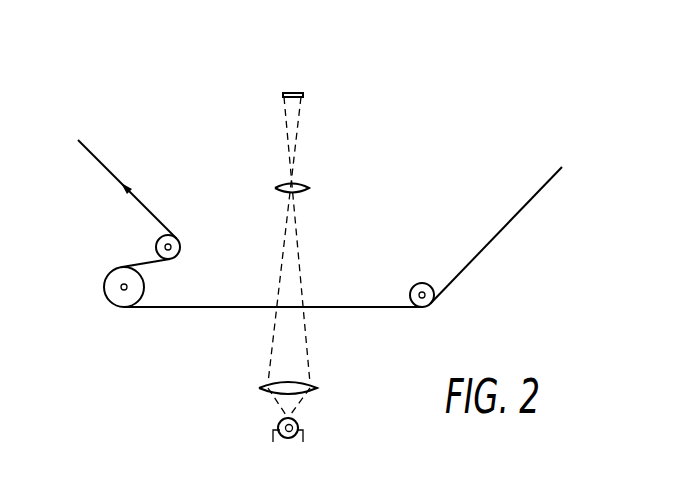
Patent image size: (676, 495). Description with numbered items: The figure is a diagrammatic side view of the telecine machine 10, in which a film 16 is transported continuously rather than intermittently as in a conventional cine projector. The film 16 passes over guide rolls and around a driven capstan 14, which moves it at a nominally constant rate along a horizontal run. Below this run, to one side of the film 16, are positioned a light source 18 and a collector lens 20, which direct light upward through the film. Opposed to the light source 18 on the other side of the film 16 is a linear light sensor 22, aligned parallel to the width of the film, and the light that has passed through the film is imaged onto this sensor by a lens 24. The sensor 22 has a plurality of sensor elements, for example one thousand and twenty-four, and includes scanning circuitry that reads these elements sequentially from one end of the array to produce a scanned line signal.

The telecine machine 10 is at (185, 117).
The driven capstan 14 is at (118, 308).
The film 16 is at (200, 308).
The light source 18 is at (283, 440).
The collector lens 20 is at (313, 388).
The linear light sensor 22 is at (290, 92).
The lens 24 is at (299, 181).